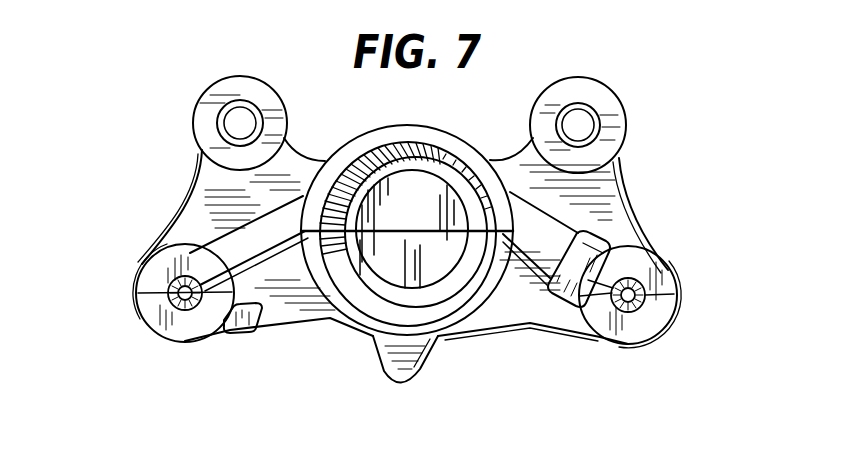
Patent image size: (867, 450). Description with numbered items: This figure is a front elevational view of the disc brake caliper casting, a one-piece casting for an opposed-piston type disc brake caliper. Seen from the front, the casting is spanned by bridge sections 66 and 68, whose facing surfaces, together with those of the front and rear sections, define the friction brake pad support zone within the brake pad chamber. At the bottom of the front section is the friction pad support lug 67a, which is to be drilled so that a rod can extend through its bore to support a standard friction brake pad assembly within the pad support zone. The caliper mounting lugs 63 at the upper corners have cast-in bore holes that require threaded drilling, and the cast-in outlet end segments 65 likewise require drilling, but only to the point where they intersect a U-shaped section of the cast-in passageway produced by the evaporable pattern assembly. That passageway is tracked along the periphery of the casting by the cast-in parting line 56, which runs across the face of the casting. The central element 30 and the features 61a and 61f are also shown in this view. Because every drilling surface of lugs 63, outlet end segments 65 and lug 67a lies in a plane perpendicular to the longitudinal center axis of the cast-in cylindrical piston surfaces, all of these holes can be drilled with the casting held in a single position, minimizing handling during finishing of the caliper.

The hub / bearing housing 30 is at (450, 141).
The cast-in parting line 56 is at (262, 262).
The mounting block 61a is at (605, 242).
The mounting tab 61f is at (246, 322).
The caliper mounting lugs 63 is at (230, 88).
The cast-in outlet end segments 65 is at (174, 300).
The bridge section 66 is at (652, 280).
The friction pad support lug 67a is at (407, 365).
The bridge section 68 is at (160, 268).